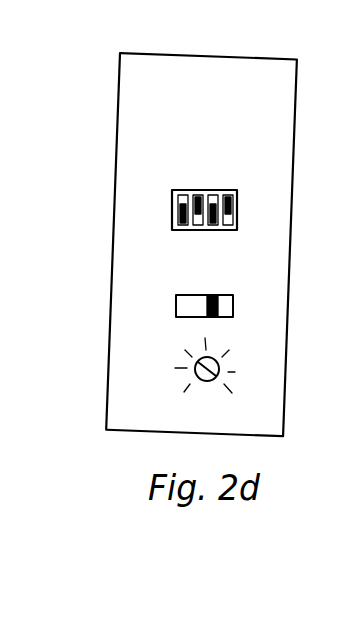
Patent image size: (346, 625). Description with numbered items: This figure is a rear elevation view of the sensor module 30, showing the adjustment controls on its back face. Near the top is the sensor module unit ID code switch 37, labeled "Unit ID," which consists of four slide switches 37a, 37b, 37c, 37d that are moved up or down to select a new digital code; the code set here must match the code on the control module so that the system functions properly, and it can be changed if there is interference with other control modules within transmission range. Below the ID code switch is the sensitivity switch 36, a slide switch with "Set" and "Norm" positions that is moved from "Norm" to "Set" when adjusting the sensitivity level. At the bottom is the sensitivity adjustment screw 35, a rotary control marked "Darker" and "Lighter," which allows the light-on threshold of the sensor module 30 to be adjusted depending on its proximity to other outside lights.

The sensor module 30 is at (97, 406).
The sensitivity adjustment screw 35 is at (197, 373).
The sensitivity switch 36 is at (233, 297).
The sensor module unit ID code switch 37 is at (164, 212).
The slide switch 37a is at (177, 230).
The slide switch 37b is at (198, 230).
The slide switch 37c is at (213, 191).
The slide switch 37d is at (237, 218).